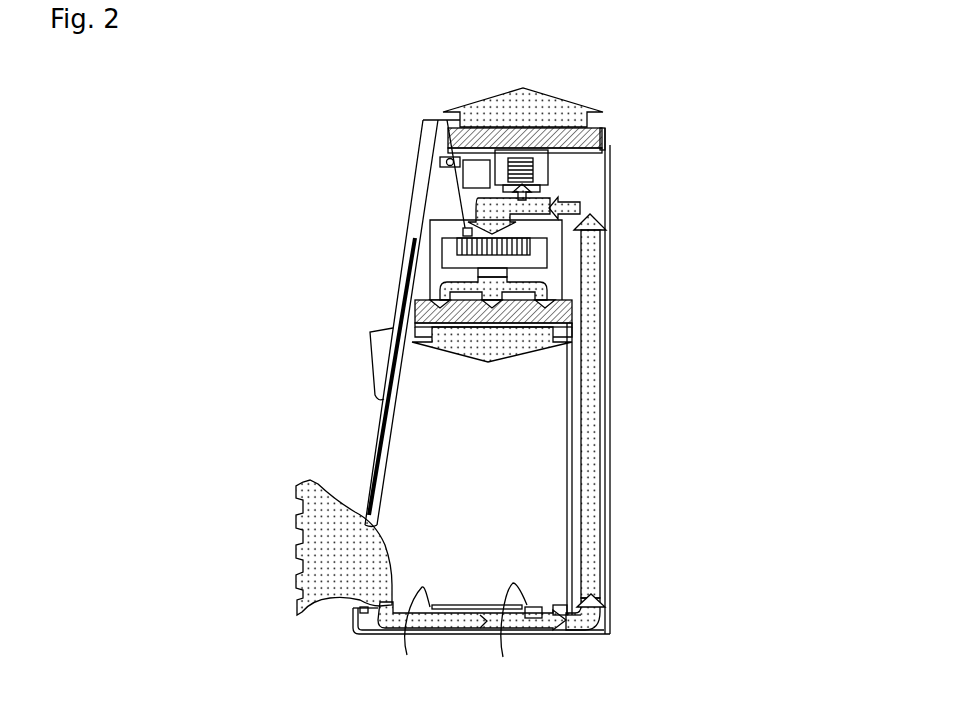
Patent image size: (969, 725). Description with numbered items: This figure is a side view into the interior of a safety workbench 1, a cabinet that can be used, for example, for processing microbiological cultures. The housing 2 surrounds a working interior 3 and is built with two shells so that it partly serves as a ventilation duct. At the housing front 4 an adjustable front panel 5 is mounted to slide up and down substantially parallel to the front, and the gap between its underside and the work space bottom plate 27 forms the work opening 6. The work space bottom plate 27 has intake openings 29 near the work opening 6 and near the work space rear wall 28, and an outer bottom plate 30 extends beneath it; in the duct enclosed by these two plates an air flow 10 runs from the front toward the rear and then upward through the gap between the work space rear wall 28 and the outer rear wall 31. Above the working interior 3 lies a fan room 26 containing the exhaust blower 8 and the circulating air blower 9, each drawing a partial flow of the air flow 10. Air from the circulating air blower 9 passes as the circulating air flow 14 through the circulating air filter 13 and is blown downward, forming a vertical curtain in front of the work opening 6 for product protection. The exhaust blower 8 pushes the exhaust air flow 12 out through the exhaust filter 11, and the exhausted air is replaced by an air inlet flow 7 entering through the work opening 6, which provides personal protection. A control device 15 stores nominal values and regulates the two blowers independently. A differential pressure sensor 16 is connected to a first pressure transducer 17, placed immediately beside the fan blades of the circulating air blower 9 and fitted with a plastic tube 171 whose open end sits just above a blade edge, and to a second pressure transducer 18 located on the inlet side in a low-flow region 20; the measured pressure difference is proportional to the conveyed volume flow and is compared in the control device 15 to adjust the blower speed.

The safety workbench 1 is at (728, 72).
The housing 2 is at (605, 472).
The working interior 3 is at (425, 450).
The housing front 4 is at (368, 308).
The front panel 5 is at (378, 427).
The work opening 6 is at (358, 521).
The air inlet flow 7 is at (327, 575).
The exhaust blower 8 is at (560, 168).
The circulating air blower 9 is at (530, 248).
The air flow 10 is at (588, 517).
The exhaust filter 11 is at (603, 132).
The exhaust air flow 12 is at (498, 102).
The circulating air filter 13 is at (572, 312).
The circulating air flow 14 is at (503, 348).
The control device 15 is at (476, 174).
The differential pressure sensor 16 is at (443, 163).
The first pressure transducer 17 is at (432, 224).
The plastic tube 171 is at (460, 207).
The second pressure transducer 18 is at (440, 170).
The low-flow region 20 is at (443, 174).
The fan room 26 is at (558, 191).
The work space bottom plate 27 is at (474, 610).
The work space rear wall 28 is at (573, 552).
The intake openings 29 is at (460, 633).
The outer bottom plate 30 is at (575, 634).
The outer rear wall 31 is at (607, 600).